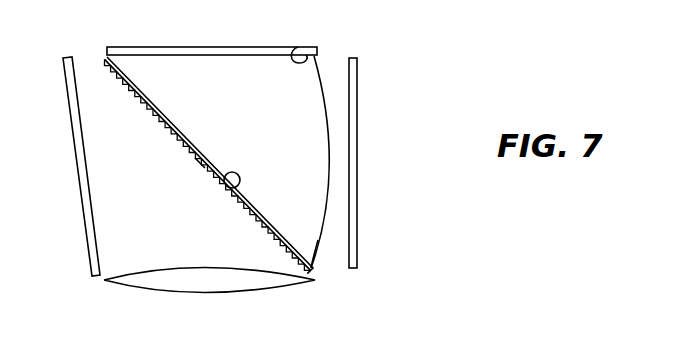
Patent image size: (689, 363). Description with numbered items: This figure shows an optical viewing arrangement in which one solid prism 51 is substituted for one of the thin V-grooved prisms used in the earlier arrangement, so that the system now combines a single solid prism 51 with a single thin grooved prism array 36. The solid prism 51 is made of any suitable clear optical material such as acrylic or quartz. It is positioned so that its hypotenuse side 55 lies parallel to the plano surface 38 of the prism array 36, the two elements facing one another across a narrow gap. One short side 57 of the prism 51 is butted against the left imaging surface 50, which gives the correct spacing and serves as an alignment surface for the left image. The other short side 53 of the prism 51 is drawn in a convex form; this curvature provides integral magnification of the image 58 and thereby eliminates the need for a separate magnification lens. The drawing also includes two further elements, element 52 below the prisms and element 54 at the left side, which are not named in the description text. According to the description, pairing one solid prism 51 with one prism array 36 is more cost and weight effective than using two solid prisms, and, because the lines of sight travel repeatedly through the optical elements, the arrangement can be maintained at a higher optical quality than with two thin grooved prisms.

The prism array 36 is at (202, 167).
The plano surface 38 is at (227, 183).
The left imaging surface 50 is at (232, 53).
The solid prism 51 is at (305, 103).
The lens 52 is at (287, 280).
The short side 53 is at (327, 182).
The side plate 54 is at (93, 255).
The hypotenuse side 55 is at (272, 233).
The short side 57 is at (298, 47).
The image 58 is at (353, 73).